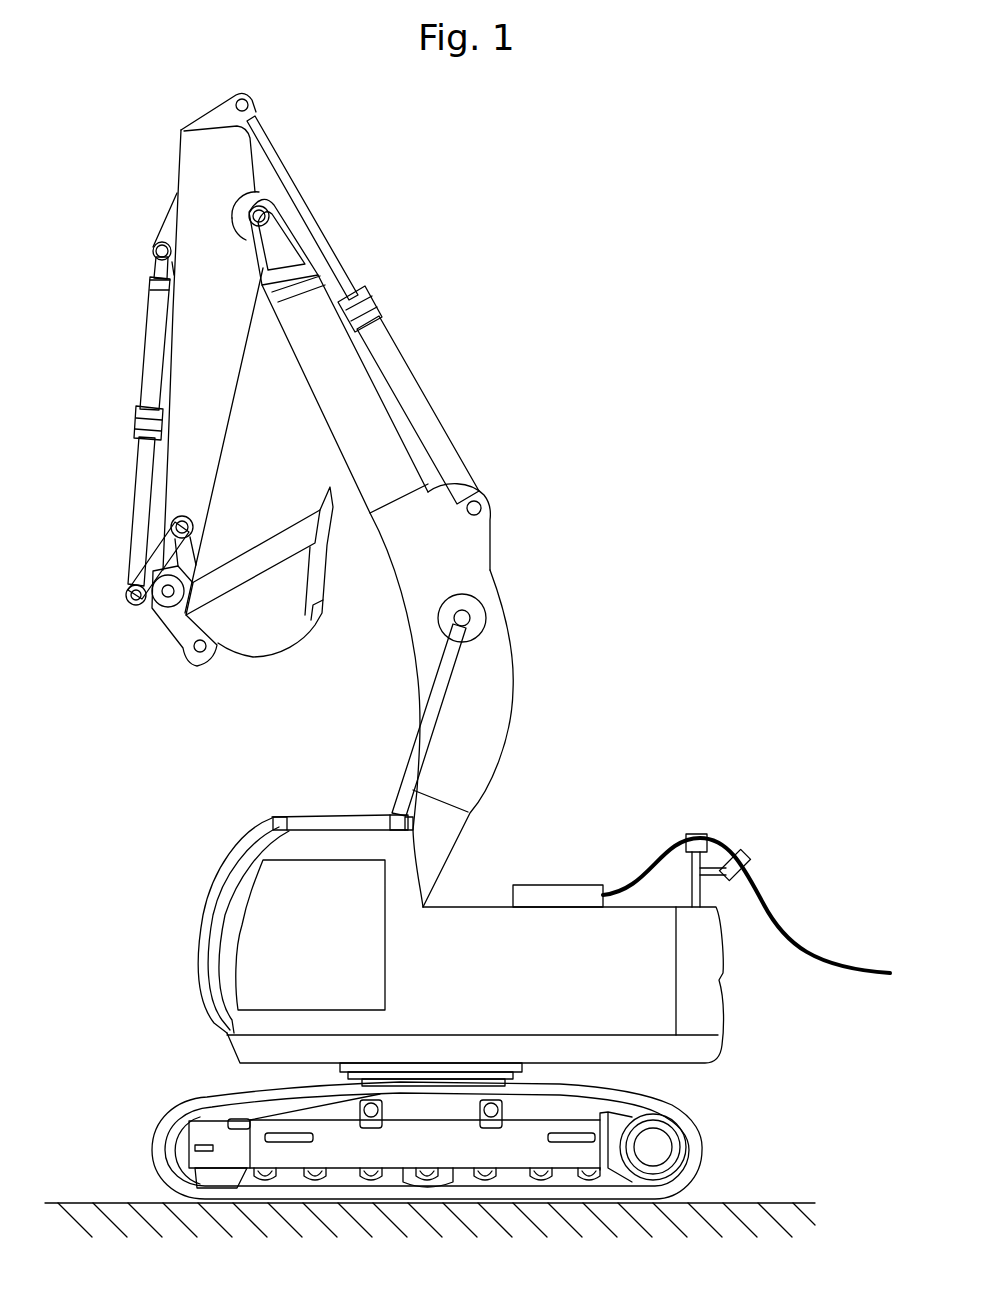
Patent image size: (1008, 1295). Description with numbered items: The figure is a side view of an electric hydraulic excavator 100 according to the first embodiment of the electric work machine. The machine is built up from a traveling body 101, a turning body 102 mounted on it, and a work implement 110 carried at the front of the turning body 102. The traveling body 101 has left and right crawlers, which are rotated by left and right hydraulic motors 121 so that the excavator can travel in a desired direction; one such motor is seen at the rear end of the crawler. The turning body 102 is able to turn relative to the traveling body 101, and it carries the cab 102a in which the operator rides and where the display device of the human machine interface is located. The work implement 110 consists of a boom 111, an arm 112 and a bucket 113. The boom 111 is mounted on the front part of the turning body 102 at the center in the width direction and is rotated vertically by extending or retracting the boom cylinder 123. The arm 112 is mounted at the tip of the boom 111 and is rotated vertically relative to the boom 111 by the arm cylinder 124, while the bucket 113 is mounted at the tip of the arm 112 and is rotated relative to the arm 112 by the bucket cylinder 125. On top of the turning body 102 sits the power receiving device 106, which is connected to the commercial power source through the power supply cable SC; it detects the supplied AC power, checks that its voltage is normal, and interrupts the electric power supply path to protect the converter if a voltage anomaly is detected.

The electric hydraulic excavator 100 is at (574, 311).
The work implement 110 is at (539, 462).
The boom 111 is at (502, 665).
The arm 112 is at (222, 430).
The bucket 113 is at (287, 610).
The boom cylinder 123 is at (386, 779).
The arm cylinder 124 is at (399, 322).
The bucket cylinder 125 is at (126, 440).
The traveling body 101 is at (710, 1099).
The turning body 102 is at (737, 984).
The cab 102a is at (255, 847).
The power receiving device 106 is at (560, 885).
The power supply cable SC is at (723, 852).
The hydraulic motor 121 is at (684, 1144).